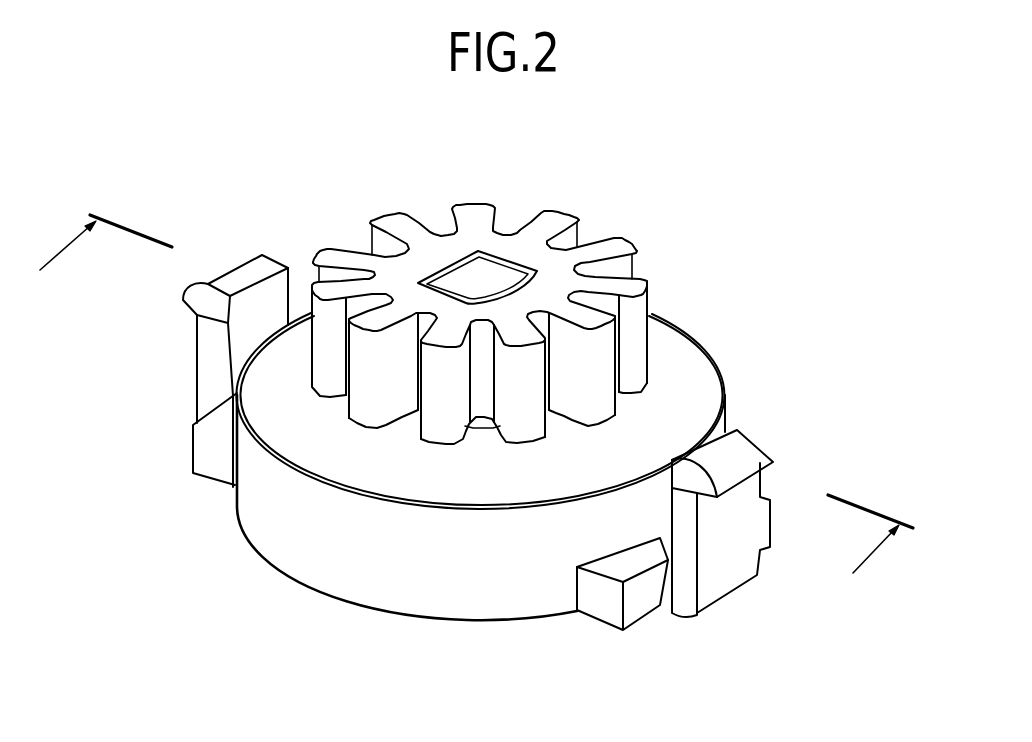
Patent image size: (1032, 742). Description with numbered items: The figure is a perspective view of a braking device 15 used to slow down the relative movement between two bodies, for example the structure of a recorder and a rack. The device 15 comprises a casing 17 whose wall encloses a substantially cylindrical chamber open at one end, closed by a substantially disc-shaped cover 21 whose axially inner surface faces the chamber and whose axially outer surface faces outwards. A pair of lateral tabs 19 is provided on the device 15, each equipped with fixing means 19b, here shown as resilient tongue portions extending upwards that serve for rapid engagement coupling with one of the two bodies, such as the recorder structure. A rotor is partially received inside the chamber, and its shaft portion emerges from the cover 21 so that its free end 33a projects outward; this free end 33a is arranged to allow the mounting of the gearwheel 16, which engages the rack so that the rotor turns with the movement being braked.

The braking device 15 is at (700, 273).
The gearwheel 16 is at (552, 222).
The casing 17 is at (370, 575).
The lateral tabs 19 is at (213, 457).
The fixing means 19b is at (197, 347).
The cover 21 is at (681, 389).
The free end of the shaft portion 33a is at (470, 281).